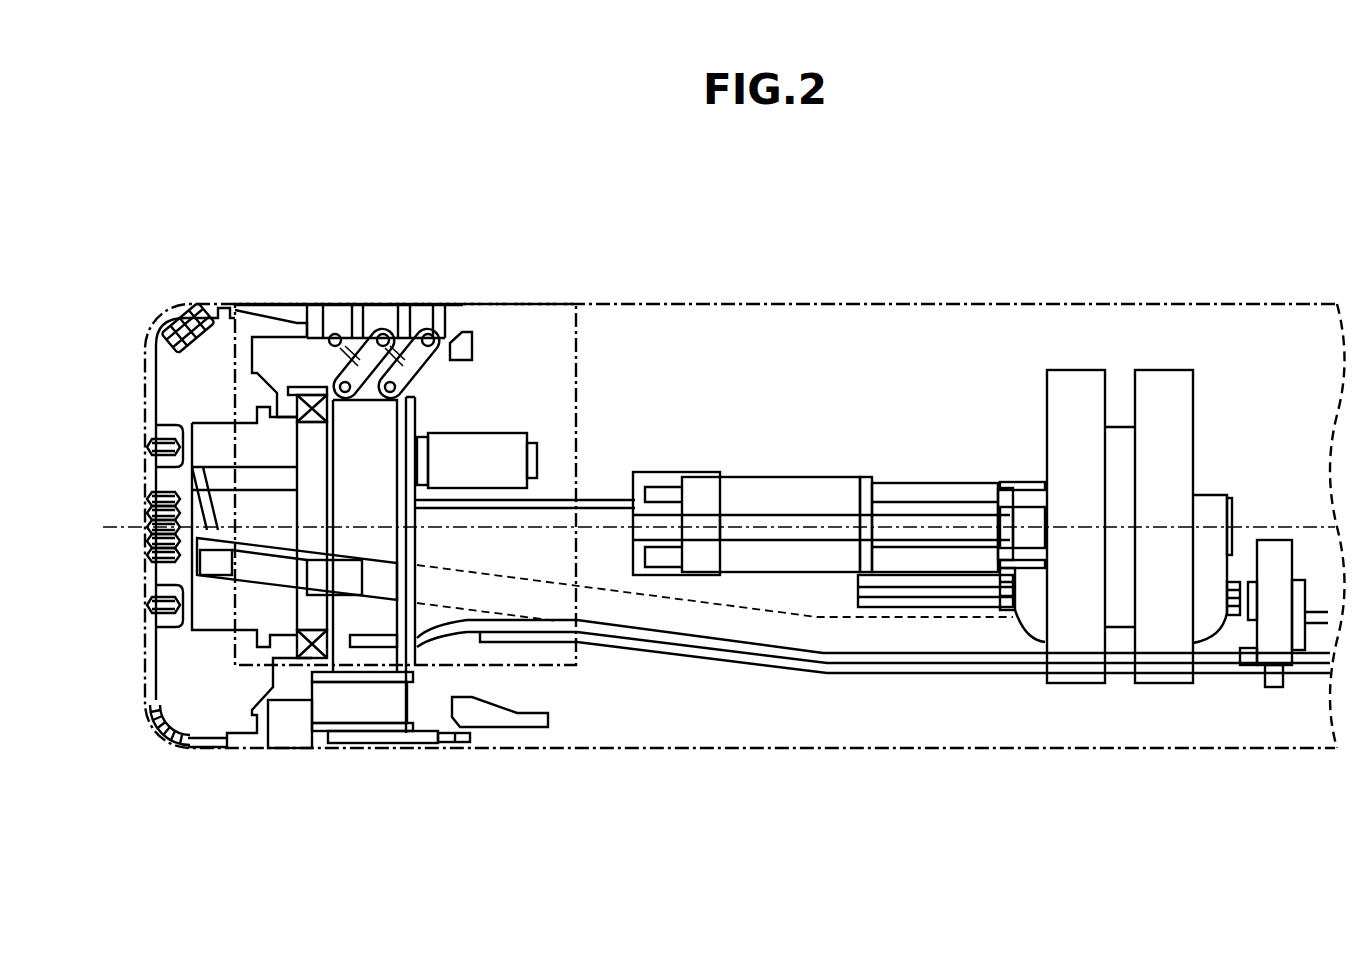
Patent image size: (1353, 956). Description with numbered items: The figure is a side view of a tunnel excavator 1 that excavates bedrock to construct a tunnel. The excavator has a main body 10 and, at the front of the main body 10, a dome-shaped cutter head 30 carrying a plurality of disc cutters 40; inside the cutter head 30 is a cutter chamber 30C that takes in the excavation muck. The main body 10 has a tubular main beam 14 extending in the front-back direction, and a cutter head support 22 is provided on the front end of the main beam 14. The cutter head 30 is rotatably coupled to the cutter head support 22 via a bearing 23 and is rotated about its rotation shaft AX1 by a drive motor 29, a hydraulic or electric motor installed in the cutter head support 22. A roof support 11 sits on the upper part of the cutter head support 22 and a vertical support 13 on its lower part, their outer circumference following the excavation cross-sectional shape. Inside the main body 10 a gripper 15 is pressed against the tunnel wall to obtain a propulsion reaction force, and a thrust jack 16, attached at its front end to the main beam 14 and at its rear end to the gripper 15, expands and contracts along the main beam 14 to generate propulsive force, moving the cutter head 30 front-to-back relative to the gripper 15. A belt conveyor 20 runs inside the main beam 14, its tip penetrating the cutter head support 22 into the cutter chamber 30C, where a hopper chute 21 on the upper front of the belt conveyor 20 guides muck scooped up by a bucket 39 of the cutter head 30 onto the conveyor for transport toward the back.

The tunnel excavator 1 is at (1217, 223).
The main body 10 is at (585, 285).
The roof support 11 is at (374, 318).
The vertical support 13 is at (427, 738).
The main beam 14 is at (668, 617).
The gripper 15 is at (1073, 385).
The thrust jack 16 is at (798, 494).
The belt conveyor 20 is at (268, 573).
The hopper chute 21 is at (244, 478).
The cutter head support 22 is at (372, 655).
The bearing 23 is at (313, 400).
The drive motor 29 is at (501, 450).
The cutter head 30 is at (173, 372).
The cutter chamber 30C is at (217, 430).
The bucket 39 is at (208, 710).
The disc cutters 40 is at (174, 312).
The rotation shaft AX1 is at (113, 528).